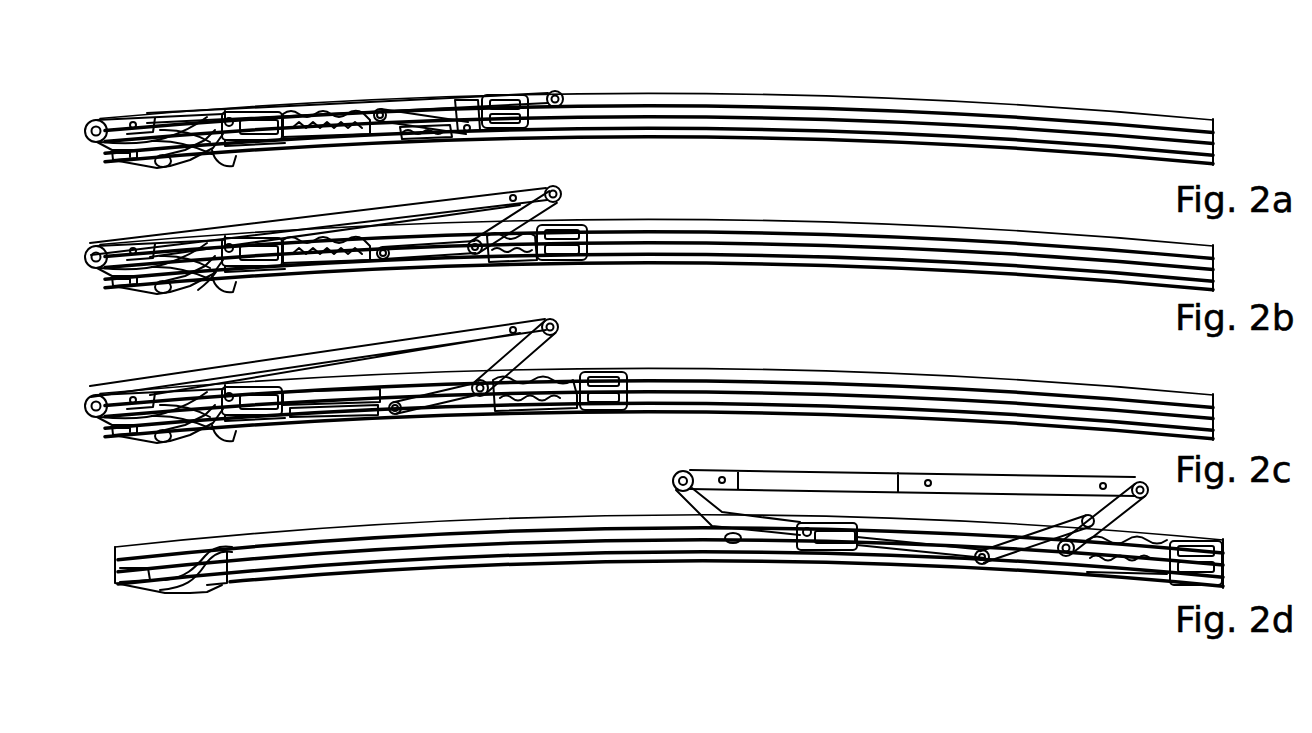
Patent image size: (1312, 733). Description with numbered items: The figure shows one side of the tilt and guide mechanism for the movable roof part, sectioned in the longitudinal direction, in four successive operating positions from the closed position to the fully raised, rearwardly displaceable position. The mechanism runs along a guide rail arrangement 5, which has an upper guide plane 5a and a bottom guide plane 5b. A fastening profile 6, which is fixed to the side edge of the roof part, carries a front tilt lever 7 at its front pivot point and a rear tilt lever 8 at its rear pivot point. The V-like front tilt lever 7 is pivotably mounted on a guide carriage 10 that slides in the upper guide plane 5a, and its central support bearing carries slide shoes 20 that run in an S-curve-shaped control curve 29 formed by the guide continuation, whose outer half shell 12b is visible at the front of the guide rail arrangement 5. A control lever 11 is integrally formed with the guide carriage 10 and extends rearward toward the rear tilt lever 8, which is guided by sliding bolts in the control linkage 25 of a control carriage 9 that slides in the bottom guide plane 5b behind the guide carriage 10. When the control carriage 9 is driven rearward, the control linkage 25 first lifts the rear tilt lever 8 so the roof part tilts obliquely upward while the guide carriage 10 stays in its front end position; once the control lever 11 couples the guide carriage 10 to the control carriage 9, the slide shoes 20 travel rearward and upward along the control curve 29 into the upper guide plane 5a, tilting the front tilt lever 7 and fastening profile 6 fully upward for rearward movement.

In FIG. 2A, the guide rail arrangement 5 is at (815, 92).
In FIG. 2B, the guide rail arrangement 5 is at (815, 222).
In FIG. 2C, the guide rail arrangement 5 is at (791, 369).
In FIG. 2D, the guide rail arrangement 5 is at (421, 507).
In FIG. 2A, the upper guide plane 5a is at (705, 118).
In FIG. 2B, the upper guide plane 5a is at (705, 245).
In FIG. 2C, the upper guide plane 5a is at (705, 393).
In FIG. 2D, the upper guide plane 5a is at (572, 540).
In FIG. 2A, the bottom guide plane 5b is at (697, 135).
In FIG. 2B, the bottom guide plane 5b is at (697, 265).
In FIG. 2C, the bottom guide plane 5b is at (697, 415).
In FIG. 2D, the bottom guide plane 5b is at (555, 550).
In FIG. 2A, the fastening profile 6 is at (443, 100).
In FIG. 2B, the fastening profile 6 is at (445, 210).
In FIG. 2C, the fastening profile 6 is at (450, 345).
In FIG. 2D, the fastening profile 6 is at (970, 473).
In FIG. 2A, the front tilt lever 7 is at (212, 130).
In FIG. 2B, the front tilt lever 7 is at (203, 258).
In FIG. 2C, the front tilt lever 7 is at (200, 407).
In FIG. 2D, the front tilt lever 7 is at (710, 505).
In FIG. 2A, the rear tilt lever 8 is at (464, 120).
In FIG. 2B, the rear tilt lever 8 is at (497, 235).
In FIG. 2C, the rear tilt lever 8 is at (548, 340).
In FIG. 2D, the rear tilt lever 8 is at (1057, 540).
In FIG. 2A, the control carriage 9 is at (330, 118).
In FIG. 2B, the control carriage 9 is at (372, 265).
In FIG. 2C, the control carriage 9 is at (490, 400).
In FIG. 2D, the control carriage 9 is at (985, 540).
In FIG. 2A, the guide carriage 10 is at (255, 116).
In FIG. 2B, the guide carriage 10 is at (255, 243).
In FIG. 2C, the guide carriage 10 is at (255, 392).
In FIG. 2D, the guide carriage 10 is at (835, 540).
In FIG. 2D, the control lever 11 is at (900, 550).
In FIG. 2A, the outer half shell 12b is at (216, 168).
In FIG. 2B, the outer half shell 12b is at (221, 302).
In FIG. 2C, the outer half shell 12b is at (216, 466).
In FIG. 2D, the outer half shell 12b is at (222, 600).
In FIG. 2A, the slide shoe 20 is at (163, 167).
In FIG. 2B, the slide shoe 20 is at (163, 293).
In FIG. 2C, the slide shoe 20 is at (166, 442).
In FIG. 2D, the slide shoe 20 is at (733, 545).
In FIG. 2A, the control linkage 25 is at (334, 140).
In FIG. 2B, the control linkage 25 is at (350, 270).
In FIG. 2C, the control linkage 25 is at (510, 405).
In FIG. 2D, the control linkage 25 is at (1103, 560).
In FIG. 2B, the control curve 29 is at (205, 288).
In FIG. 2D, the control curve 29 is at (192, 583).